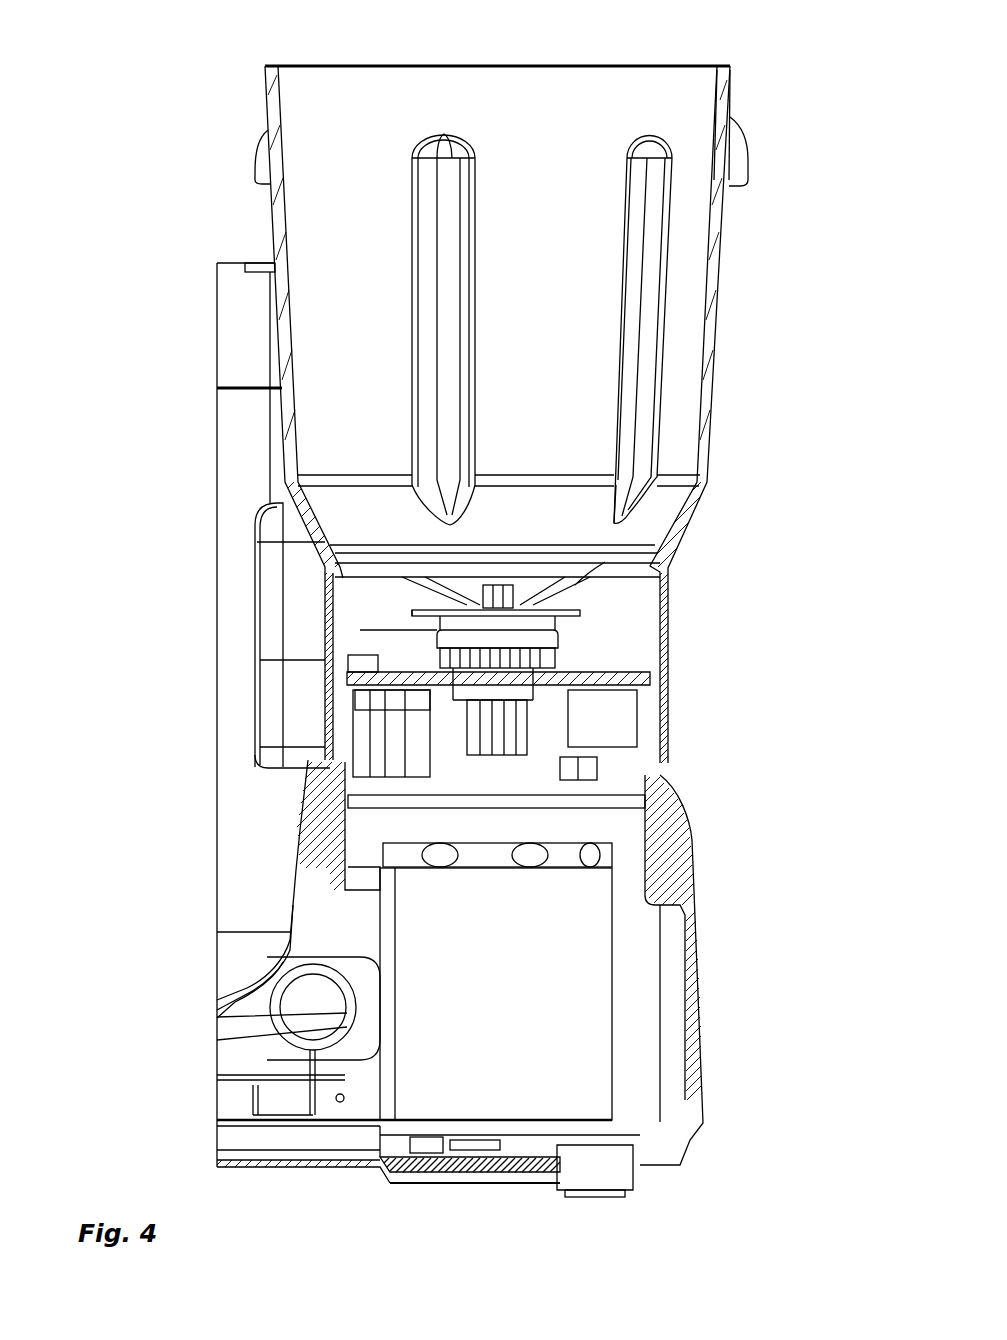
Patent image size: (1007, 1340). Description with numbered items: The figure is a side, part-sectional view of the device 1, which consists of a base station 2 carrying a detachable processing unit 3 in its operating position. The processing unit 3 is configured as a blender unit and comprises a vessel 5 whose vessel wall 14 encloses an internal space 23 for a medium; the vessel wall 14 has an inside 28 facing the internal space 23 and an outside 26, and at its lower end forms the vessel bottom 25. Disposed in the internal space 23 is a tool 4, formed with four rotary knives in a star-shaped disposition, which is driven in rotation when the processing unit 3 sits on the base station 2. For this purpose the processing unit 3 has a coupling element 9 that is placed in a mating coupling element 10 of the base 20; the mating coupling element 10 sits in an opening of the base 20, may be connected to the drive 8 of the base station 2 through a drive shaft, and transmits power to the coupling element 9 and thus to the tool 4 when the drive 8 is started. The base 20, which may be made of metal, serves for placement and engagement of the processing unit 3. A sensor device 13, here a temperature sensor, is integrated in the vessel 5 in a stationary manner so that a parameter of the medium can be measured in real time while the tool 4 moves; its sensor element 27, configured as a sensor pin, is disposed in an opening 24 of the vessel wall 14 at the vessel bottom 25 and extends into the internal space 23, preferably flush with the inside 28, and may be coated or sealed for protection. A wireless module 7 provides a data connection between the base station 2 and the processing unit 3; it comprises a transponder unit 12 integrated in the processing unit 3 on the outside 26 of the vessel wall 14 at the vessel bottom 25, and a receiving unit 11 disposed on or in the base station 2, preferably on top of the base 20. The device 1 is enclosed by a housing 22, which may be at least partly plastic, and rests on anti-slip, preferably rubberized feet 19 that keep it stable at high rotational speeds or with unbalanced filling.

The device 1 is at (172, 300).
The base station 2 is at (198, 923).
The processing unit 3 is at (260, 132).
The tool 4 is at (410, 600).
The vessel 5 is at (313, 338).
The wireless module 7 is at (365, 660).
The drive 8 is at (557, 960).
The coupling element 9 is at (545, 730).
The mating coupling element 10 is at (560, 673).
The receiving unit 11 is at (350, 698).
The transponder unit 12 is at (365, 690).
The sensor device 13 is at (390, 631).
The vessel wall 14 is at (712, 292).
The feet 19 is at (633, 1175).
The base 20 is at (618, 742).
The housing 22 is at (243, 488).
The internal space 23 is at (538, 142).
The opening 24 is at (570, 650).
The vessel bottom 25 is at (590, 650).
The outside 26 is at (735, 100).
The sensor element 27 is at (400, 607).
The inside 28 is at (712, 100).